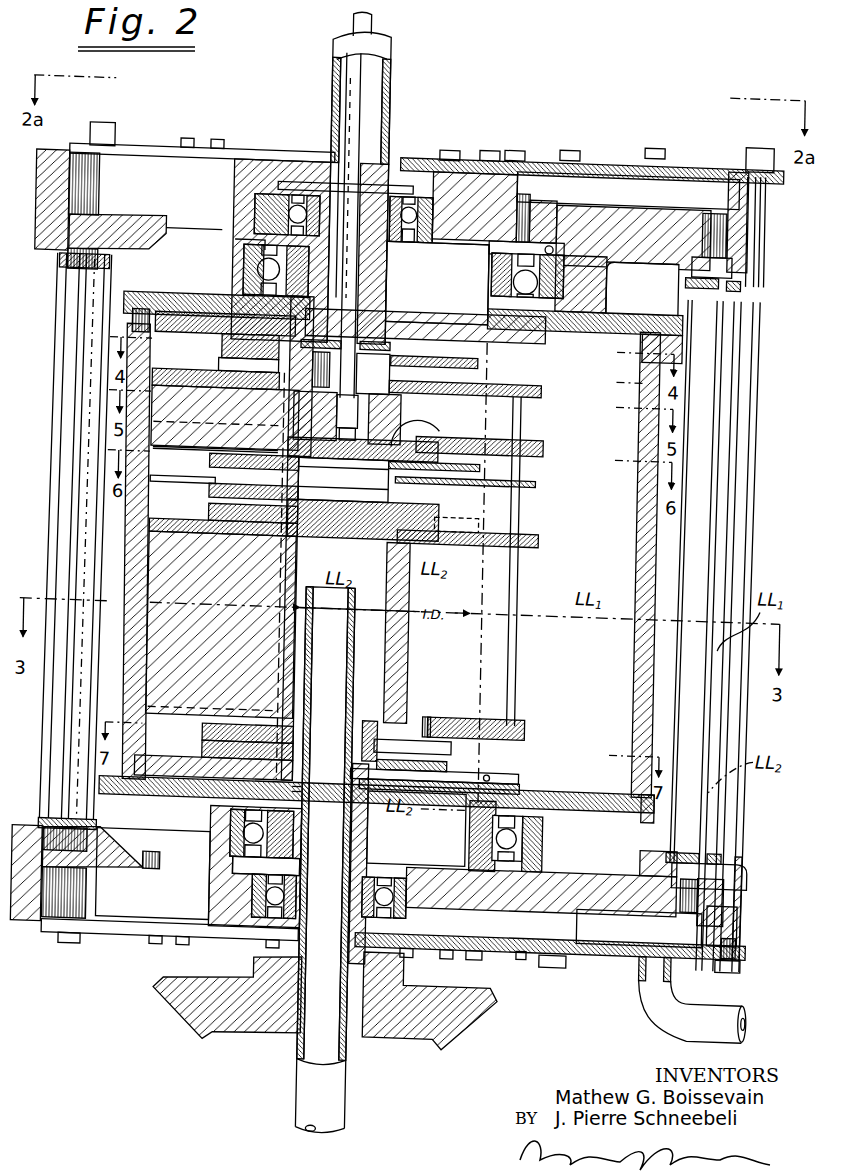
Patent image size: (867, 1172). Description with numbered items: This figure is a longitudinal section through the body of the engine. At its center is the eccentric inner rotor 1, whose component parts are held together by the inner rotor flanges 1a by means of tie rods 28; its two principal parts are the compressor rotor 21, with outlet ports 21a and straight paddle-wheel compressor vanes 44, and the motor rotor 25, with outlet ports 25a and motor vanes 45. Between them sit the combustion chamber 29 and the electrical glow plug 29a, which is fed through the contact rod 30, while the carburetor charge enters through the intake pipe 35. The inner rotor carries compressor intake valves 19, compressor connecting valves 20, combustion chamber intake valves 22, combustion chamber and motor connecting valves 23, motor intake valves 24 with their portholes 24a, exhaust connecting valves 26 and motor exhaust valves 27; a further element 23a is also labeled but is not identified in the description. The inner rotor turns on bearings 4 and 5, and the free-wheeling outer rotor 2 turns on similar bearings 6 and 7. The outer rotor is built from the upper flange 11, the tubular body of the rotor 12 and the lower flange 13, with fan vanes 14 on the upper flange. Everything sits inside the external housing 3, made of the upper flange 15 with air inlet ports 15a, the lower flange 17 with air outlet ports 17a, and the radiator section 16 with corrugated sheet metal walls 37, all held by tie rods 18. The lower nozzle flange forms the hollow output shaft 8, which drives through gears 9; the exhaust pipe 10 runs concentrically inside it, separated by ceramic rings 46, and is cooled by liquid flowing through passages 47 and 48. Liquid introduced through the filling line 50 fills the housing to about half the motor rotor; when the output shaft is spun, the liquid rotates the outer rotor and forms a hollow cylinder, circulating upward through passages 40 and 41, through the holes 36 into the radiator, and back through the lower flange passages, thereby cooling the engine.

The eccentric inner rotor 1 is at (203, 278).
The inner rotor flange 1a is at (537, 331).
The outer rotor 2 is at (690, 571).
The external housing 3 is at (752, 374).
The bearing 4 is at (402, 222).
The bearing 5 is at (396, 880).
The bearing 6 is at (480, 830).
The bearing 7 is at (516, 281).
The output shaft 8 is at (300, 1000).
The gears 9 is at (230, 1028).
The exhaust pipe 10 is at (340, 1104).
The upper flange 11 is at (677, 318).
The tubular body of the rotor 12 is at (650, 555).
The lower flange 13 is at (658, 798).
The vanes 14 is at (188, 277).
The upper flange 15 is at (50, 158).
The ports or openings 15a is at (173, 226).
The radiator section 16 is at (728, 446).
The lower flange 17 is at (28, 836).
The ports or openings 17a is at (176, 924).
The tie rods 18 is at (730, 728).
The compressor intake valves 19 is at (245, 370).
The compressor connecting valves 20 is at (222, 348).
The compressor rotor 21 is at (540, 442).
The outlet ports 21a is at (415, 438).
The combustion chamber intake valves 22 is at (240, 455).
The combustion chamber and motor connecting valves 23 is at (208, 475).
The separating disc 23a is at (533, 481).
The motor intake valves 24 is at (208, 517).
The portholes 24a is at (478, 518).
The motor rotor 25 is at (515, 714).
The outlet ports 25a is at (430, 716).
The exhaust connecting valves 26 is at (212, 755).
The motor exhaust valves 27 is at (240, 738).
The tie rods 28 is at (296, 571).
The combustion chamber 29 is at (342, 540).
The electrical glow plug or ignition device 29a is at (352, 430).
The contact rod 30 is at (350, 96).
The intake pipe 35 is at (390, 52).
The holes 36 is at (724, 280).
The sheet metal walls 37 is at (52, 508).
The water passages 40 is at (521, 200).
The water passages 41 is at (669, 180).
The compressor vanes 44 is at (506, 418).
The motor vanes 45 is at (510, 580).
The ceramic rings 46 is at (362, 760).
The passages 47 is at (300, 830).
The passages 48 is at (491, 773).
The filling line 50 is at (742, 994).